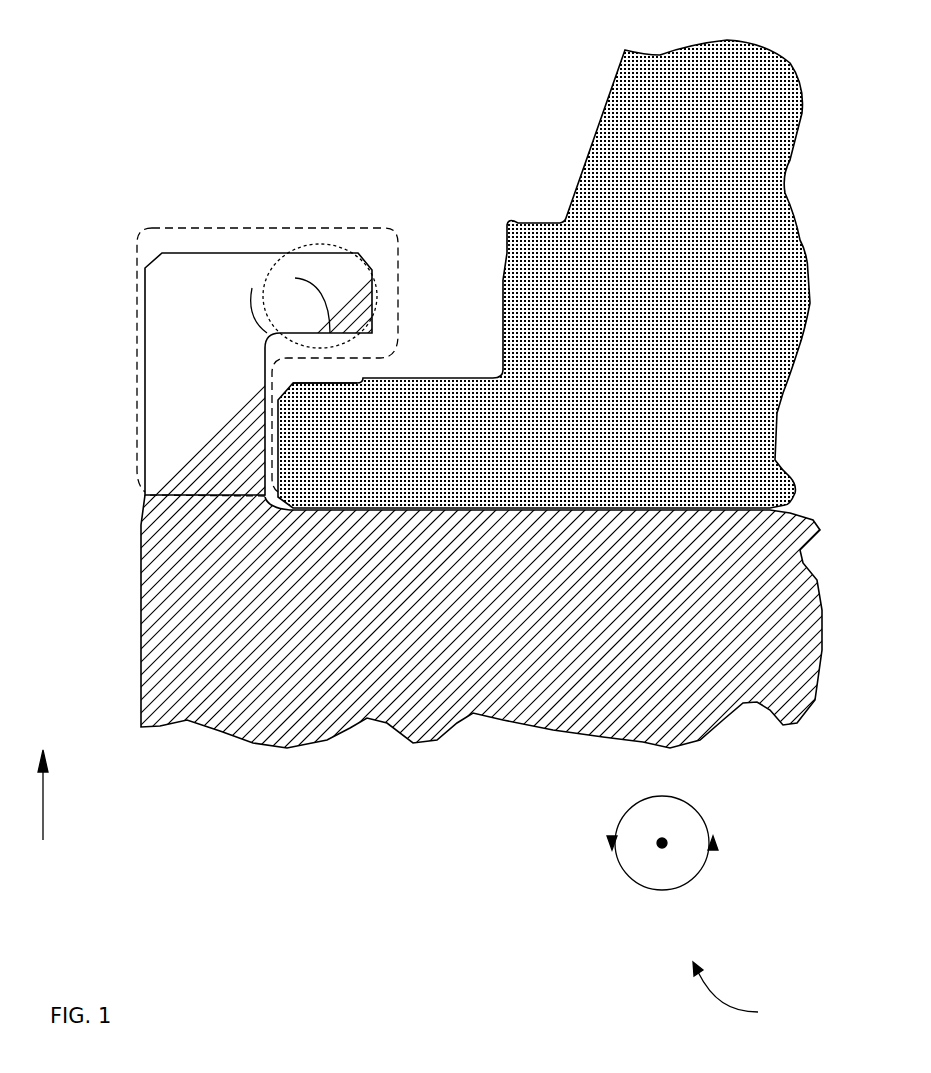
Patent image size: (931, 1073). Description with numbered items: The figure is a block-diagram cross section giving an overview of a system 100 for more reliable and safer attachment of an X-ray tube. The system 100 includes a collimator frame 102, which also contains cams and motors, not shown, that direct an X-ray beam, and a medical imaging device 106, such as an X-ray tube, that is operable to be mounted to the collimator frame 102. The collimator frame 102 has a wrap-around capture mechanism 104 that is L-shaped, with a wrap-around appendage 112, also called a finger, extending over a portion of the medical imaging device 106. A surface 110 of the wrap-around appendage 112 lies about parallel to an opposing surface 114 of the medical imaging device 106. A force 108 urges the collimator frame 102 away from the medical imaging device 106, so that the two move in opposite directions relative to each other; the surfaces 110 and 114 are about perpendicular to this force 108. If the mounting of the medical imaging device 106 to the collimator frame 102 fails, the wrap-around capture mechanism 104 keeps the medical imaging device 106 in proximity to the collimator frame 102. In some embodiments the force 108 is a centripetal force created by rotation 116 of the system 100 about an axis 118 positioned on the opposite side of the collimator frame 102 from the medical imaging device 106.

The system 100 is at (747, 992).
The collimator frame 102 is at (145, 572).
The wrap-around capture mechanism 104 is at (137, 278).
The medical imaging device 106 is at (633, 82).
The force 108 is at (43, 805).
The surface 110 is at (314, 296).
The wrap-around appendage 112 is at (318, 242).
The opposing surface 114 is at (323, 383).
The rotation 116 is at (620, 872).
The axis 118 is at (662, 843).